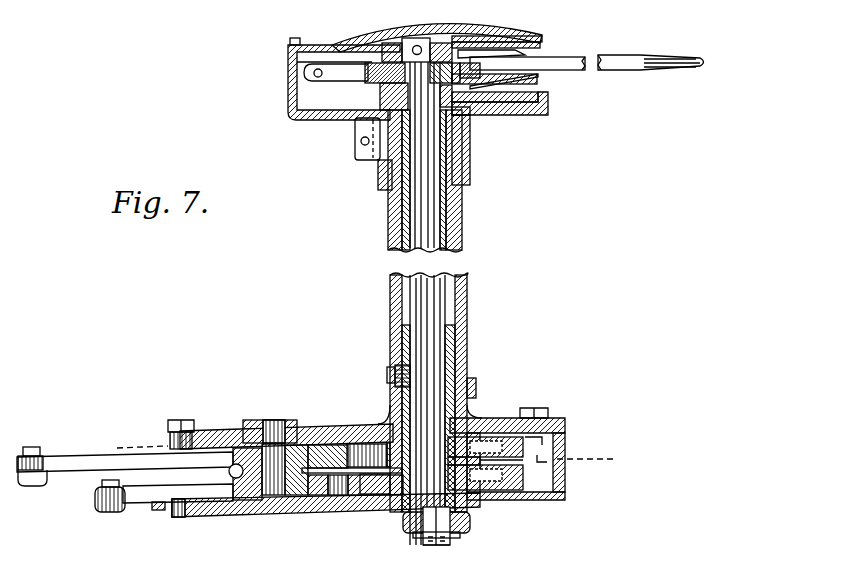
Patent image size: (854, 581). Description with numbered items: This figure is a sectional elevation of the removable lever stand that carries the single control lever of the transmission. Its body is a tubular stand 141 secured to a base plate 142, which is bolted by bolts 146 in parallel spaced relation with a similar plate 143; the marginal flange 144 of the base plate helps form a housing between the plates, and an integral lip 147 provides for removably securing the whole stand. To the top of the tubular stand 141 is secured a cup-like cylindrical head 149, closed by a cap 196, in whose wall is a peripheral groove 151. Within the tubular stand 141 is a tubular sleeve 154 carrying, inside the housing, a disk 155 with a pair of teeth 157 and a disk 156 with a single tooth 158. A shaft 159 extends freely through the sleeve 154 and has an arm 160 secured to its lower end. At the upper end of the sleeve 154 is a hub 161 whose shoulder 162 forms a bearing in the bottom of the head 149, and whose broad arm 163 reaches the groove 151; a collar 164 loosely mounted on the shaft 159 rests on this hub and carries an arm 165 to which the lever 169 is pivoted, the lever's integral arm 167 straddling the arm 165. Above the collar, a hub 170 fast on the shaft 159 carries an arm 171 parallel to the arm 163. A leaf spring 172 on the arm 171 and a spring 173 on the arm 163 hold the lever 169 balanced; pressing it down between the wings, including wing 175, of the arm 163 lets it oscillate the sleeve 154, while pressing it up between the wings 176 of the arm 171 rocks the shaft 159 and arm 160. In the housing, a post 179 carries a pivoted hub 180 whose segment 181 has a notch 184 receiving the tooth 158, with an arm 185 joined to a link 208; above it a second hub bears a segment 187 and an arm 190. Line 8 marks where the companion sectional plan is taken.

The section line 8— 8 is at (365, 450).
The tubular stand 141 is at (469, 289).
The base plate 142 is at (474, 414).
The plate 143 is at (523, 503).
The marginal flange 144 is at (563, 443).
The bolts 146 is at (182, 403).
The lip 147 is at (459, 563).
The cup-like cylindrical head 149 is at (298, 102).
The peripheral groove 151 is at (542, 81).
The tubular sleeve 154 is at (450, 353).
The disk 155 is at (513, 452).
The disk 156 is at (525, 481).
The teeth 157 is at (432, 556).
The tooth 158 is at (340, 497).
The shaft 159 is at (430, 228).
The arm 160 is at (472, 532).
The hub 161 is at (472, 138).
The shoulder 162 is at (382, 84).
The arm 163 is at (528, 116).
The collar 164 is at (352, 121).
The arm 165 is at (335, 62).
The arm 167 is at (333, 78).
The lever 169 is at (572, 63).
The hub 170 is at (443, 33).
The arm 171 is at (500, 36).
The leaf spring 172 is at (512, 44).
The spring 173 is at (516, 103).
The wing 175 is at (530, 86).
The wings 176 is at (526, 53).
The post 179 is at (297, 424).
The hub 180 is at (287, 509).
The segment 181 is at (312, 513).
The notch 184 is at (322, 512).
The arm 185 is at (168, 513).
The segment 187 is at (333, 443).
The arm 190 is at (62, 458).
The cap 196 is at (396, 29).
The link 208 is at (128, 513).